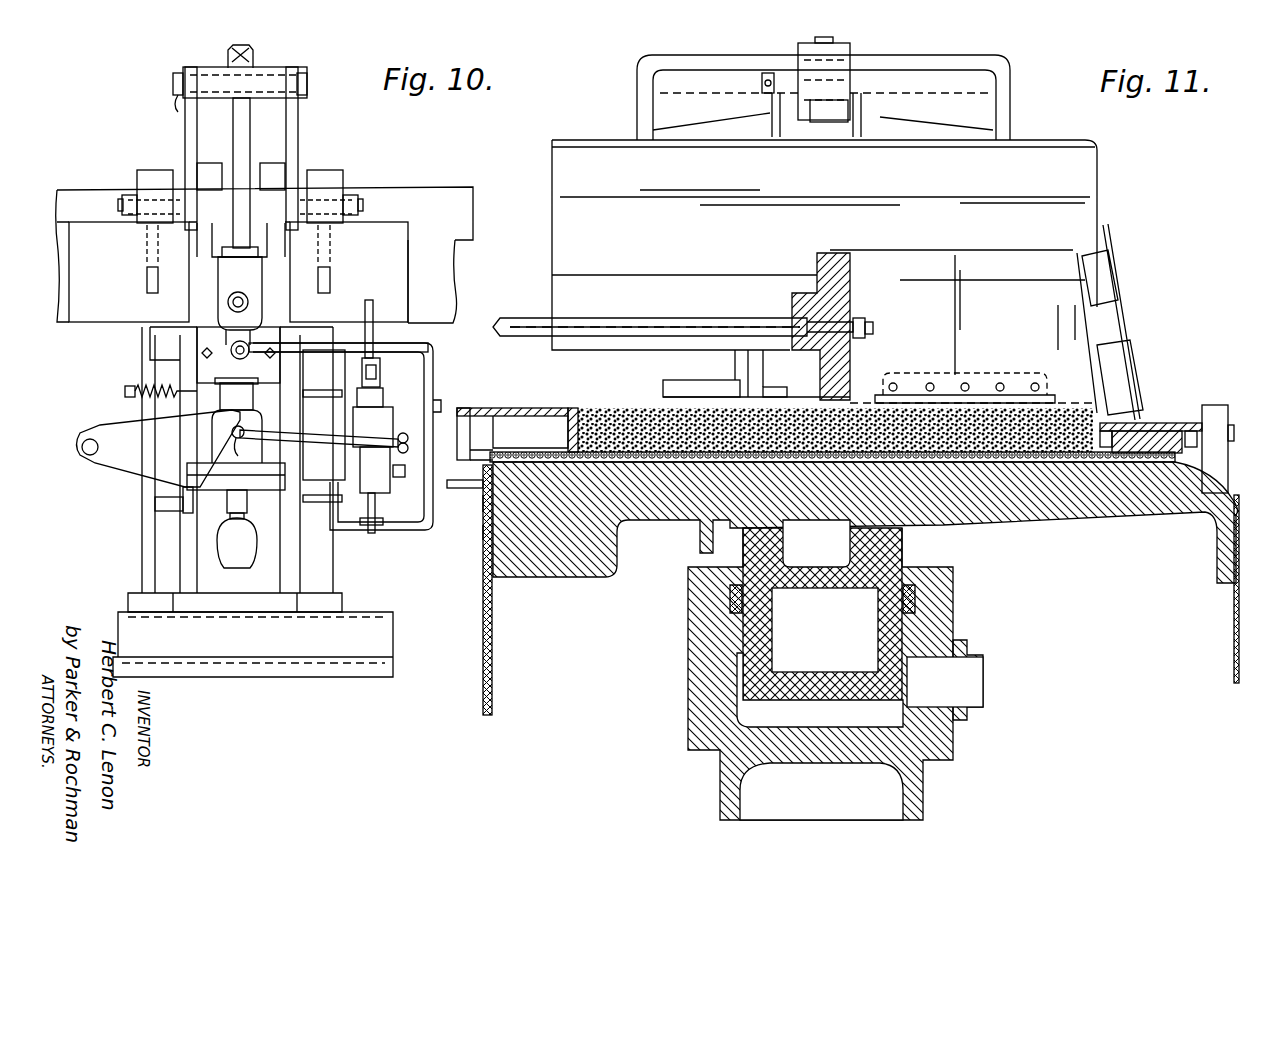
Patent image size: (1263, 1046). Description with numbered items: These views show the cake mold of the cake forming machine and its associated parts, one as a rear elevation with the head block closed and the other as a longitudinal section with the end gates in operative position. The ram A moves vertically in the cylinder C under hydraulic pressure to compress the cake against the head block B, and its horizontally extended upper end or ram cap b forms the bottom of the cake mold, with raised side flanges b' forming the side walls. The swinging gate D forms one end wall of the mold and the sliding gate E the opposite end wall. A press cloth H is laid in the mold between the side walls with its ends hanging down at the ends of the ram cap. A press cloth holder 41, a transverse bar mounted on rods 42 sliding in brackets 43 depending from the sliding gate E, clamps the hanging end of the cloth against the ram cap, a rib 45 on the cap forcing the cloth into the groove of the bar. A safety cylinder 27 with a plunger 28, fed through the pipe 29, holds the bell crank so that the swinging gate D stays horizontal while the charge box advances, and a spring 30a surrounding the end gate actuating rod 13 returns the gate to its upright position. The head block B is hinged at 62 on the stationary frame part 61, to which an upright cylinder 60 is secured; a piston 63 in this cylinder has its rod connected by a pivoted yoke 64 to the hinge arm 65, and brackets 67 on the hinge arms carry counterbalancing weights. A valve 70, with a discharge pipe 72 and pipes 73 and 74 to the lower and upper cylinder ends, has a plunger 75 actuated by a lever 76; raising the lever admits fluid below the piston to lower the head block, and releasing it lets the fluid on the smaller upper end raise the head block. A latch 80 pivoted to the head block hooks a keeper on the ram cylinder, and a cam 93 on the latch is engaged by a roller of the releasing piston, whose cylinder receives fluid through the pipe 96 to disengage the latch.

In FIG. 10, the end gate actuating rod 13 is at (330, 390).
In FIG. 10, the safety cylinder 27 is at (190, 517).
In FIG. 10, the plunger 28 is at (172, 500).
In FIG. 10, the pipe 29 is at (315, 500).
In FIG. 10, the spring 30a is at (140, 380).
In FIG. 11, the press cloth holder 41 is at (482, 528).
In FIG. 11, the rods 42 is at (450, 488).
In FIG. 11, the brackets 43 is at (466, 430).
In FIG. 11, the rib 45 is at (482, 498).
In FIG. 10, the upright cylinder 60 is at (230, 398).
In FIG. 10, the stationary frame part 61 is at (228, 568).
In FIG. 10, the hinge 62 is at (137, 193).
In FIG. 10, the piston 63 is at (240, 146).
In FIG. 10, the pivoted yoke 64 is at (288, 118).
In FIG. 11, the pivoted yoke 64 is at (755, 365).
In FIG. 10, the hinge arm 65 is at (150, 172).
In FIG. 11, the hinge arm 65 is at (688, 357).
In FIG. 10, the brackets 67 is at (150, 217).
In FIG. 10, the valve 70 is at (380, 460).
In FIG. 10, the discharge pipe 72 is at (398, 477).
In FIG. 10, the pipe 73 is at (315, 415).
In FIG. 10, the pipe 74 is at (330, 345).
In FIG. 10, the valve plunger 75 is at (380, 380).
In FIG. 10, the lever 76 is at (373, 340).
In FIG. 11, the latch 80 is at (842, 53).
In FIG. 11, the cam 93 is at (830, 120).
In FIG. 10, the pipe 96 is at (348, 528).
In FIG. 10, the ram A is at (440, 297).
In FIG. 11, the ram A is at (825, 630).
In FIG. 11, the head block B is at (847, 280).
In FIG. 11, the cylinder C is at (837, 670).
In FIG. 11, the swinging gate D is at (1170, 422).
In FIG. 11, the sliding gate E is at (548, 392).
In FIG. 11, the press cloth H is at (493, 615).
In FIG. 10, the ram cap b is at (264, 243).
In FIG. 11, the ram cap b is at (865, 522).
In FIG. 11, the side flanges b' is at (530, 432).